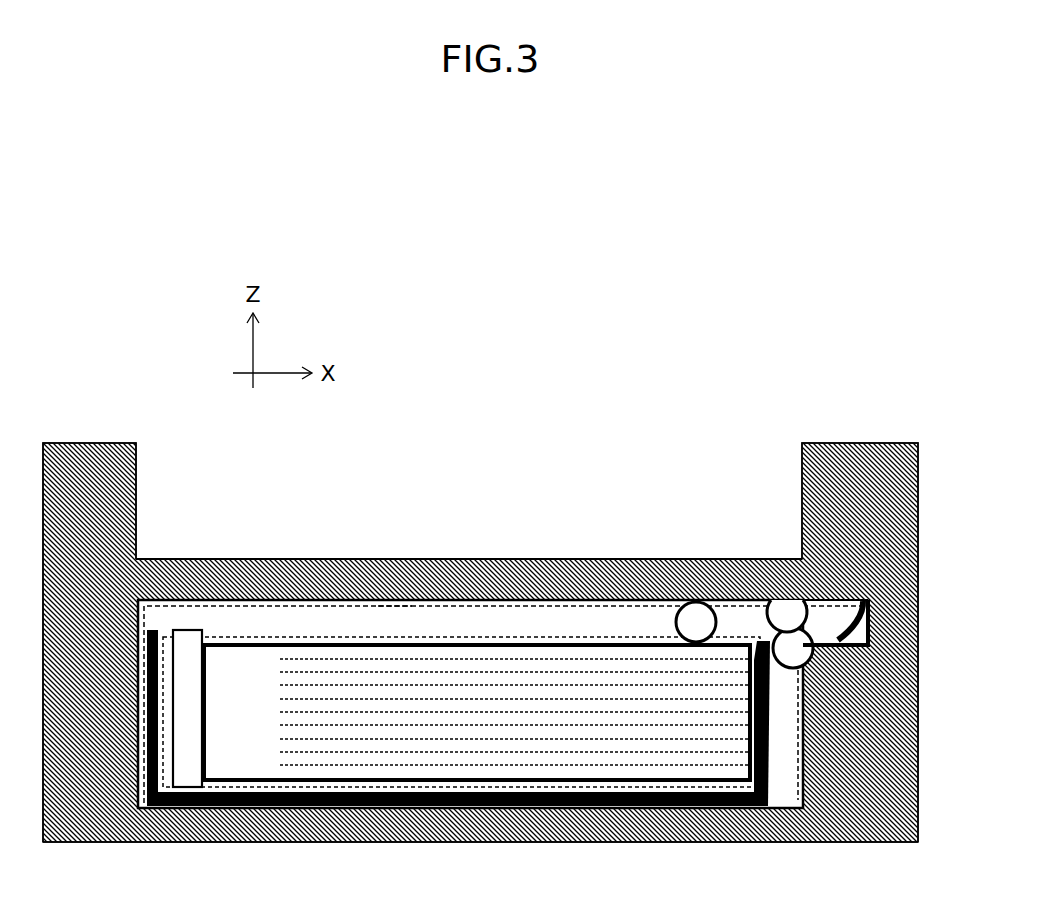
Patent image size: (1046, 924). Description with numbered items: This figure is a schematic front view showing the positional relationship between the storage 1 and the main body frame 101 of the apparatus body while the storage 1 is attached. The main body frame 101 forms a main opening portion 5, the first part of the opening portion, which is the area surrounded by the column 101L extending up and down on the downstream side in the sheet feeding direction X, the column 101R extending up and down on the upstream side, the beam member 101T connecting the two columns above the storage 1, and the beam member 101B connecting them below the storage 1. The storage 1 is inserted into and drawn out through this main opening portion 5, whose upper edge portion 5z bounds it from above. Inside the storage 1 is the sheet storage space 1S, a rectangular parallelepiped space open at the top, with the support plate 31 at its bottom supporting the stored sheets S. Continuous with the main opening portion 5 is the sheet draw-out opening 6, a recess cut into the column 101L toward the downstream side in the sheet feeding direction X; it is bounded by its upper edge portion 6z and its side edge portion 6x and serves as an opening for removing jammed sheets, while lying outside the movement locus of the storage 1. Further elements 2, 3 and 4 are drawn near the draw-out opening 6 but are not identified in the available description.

The main body frame 101 is at (812, 418).
The column 101R is at (79, 441).
The column 101L is at (878, 441).
The beam member 101T is at (315, 558).
The beam member 101B is at (673, 832).
The storage 1 is at (343, 800).
The sheet storage space 1S is at (486, 636).
The support plate 31 is at (512, 791).
The sheets S is at (596, 647).
The main opening portion 5 is at (432, 609).
The upper edge portion 5z is at (394, 602).
The spacer 2 is at (694, 614).
The spacer 3 is at (787, 601).
The lead tab 4 is at (807, 673).
The sheet draw-out opening 6 is at (843, 613).
The upper edge portion 6z is at (842, 598).
The side edge portion 6x is at (866, 618).